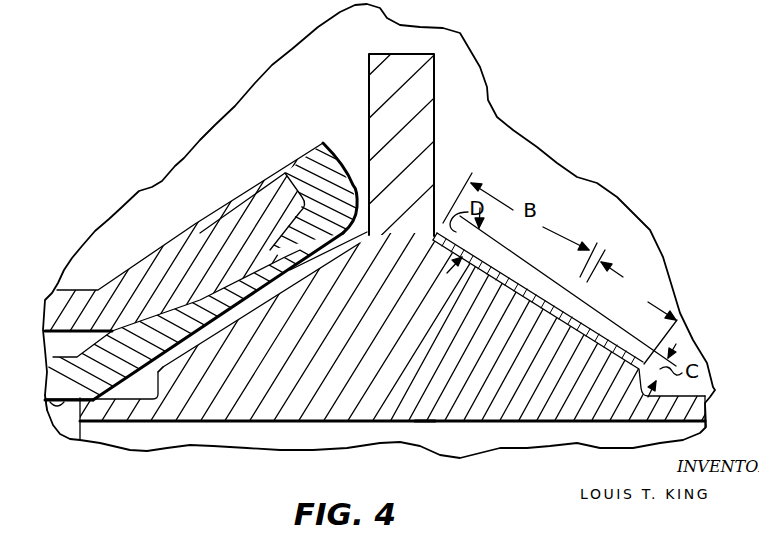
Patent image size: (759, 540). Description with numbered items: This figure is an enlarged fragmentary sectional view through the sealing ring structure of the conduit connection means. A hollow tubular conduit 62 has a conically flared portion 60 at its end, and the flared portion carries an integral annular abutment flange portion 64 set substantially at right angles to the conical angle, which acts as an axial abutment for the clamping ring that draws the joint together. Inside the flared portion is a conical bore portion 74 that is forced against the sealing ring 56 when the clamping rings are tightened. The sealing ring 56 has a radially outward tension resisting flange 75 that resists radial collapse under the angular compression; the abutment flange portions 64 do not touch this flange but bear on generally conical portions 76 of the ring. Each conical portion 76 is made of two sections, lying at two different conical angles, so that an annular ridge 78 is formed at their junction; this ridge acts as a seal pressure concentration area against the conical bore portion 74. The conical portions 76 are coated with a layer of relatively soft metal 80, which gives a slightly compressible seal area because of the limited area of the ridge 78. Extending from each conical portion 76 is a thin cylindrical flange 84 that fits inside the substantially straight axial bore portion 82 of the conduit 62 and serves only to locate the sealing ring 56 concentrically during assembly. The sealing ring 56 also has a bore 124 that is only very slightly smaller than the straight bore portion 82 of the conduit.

The sealing ring 56 is at (549, 405).
The conically flared portion 60 is at (200, 292).
The hollow tubular conduit 62 is at (98, 365).
The annular abutment flange portion 64 is at (325, 143).
The conical bore portion 74 is at (190, 353).
The tension resisting flange 75 is at (387, 63).
The generally conical portion 76 is at (303, 260).
The annular ridge 78 is at (300, 255).
The layer of relatively soft metal 80 is at (232, 280).
The straight axial bore portion 82 is at (47, 403).
The cylindrical flange 84 is at (100, 408).
The bore 124 is at (426, 422).